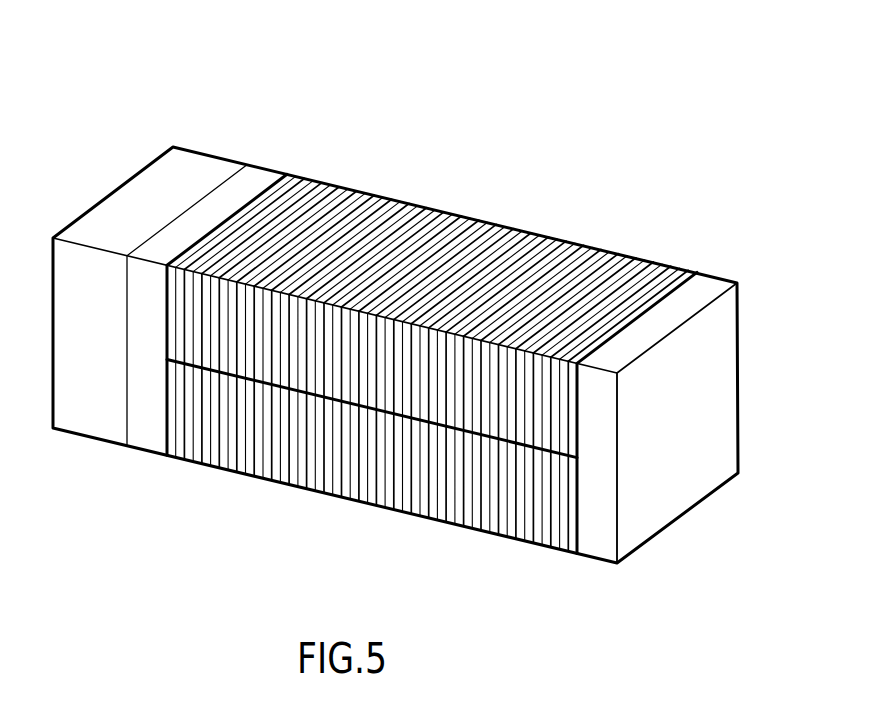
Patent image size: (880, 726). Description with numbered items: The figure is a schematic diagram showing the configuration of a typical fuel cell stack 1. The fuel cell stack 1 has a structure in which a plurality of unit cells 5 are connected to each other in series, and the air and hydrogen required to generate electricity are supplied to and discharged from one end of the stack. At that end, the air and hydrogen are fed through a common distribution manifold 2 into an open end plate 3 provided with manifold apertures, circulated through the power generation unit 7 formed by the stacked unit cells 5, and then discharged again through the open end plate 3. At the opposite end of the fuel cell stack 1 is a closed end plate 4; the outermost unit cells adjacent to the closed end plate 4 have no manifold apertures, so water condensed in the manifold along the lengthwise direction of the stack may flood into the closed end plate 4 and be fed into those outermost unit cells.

The fuel cell stack 1 is at (432, 169).
The common distribution manifold 2 is at (158, 193).
The open end plate 3 is at (215, 212).
The closed end plate 4 is at (705, 290).
The unit cells 5 is at (470, 250).
The power generation unit 7 is at (517, 533).